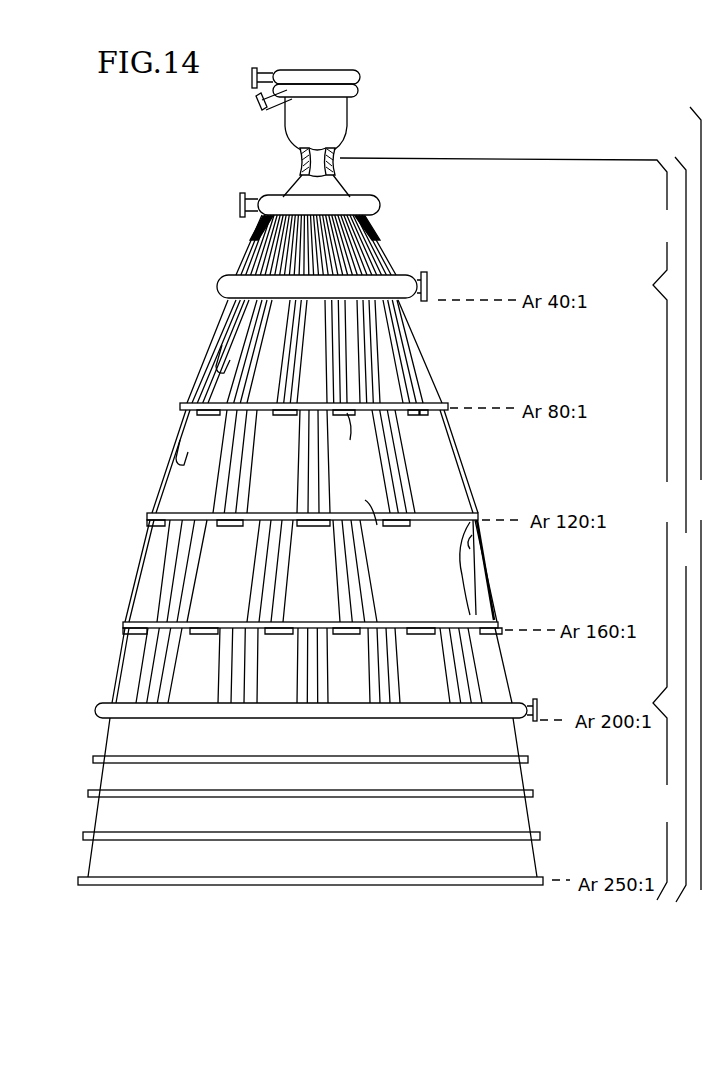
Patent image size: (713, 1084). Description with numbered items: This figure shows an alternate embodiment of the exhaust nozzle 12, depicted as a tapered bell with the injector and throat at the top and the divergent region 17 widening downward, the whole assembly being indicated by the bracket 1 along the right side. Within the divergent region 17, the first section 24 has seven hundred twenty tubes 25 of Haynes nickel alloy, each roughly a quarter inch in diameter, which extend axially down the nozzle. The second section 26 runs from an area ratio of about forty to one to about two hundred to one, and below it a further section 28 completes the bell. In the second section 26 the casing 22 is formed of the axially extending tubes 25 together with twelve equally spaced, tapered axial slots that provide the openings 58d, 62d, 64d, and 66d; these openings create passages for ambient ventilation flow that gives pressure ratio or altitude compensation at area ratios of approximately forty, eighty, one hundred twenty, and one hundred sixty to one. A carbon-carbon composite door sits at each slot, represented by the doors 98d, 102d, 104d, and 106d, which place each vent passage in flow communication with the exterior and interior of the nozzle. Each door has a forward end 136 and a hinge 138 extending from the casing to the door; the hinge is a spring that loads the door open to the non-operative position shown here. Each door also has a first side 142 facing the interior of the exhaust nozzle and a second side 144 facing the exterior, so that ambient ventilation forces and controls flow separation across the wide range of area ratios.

The rocket engine nozzle assembly 1 is at (701, 498).
The exhaust nozzle 12 is at (694, 345).
The divergent region 17 is at (686, 722).
The casing 22 is at (470, 468).
The first section 24 is at (510, 320).
The tubes 25 is at (368, 254).
The second section 26 is at (666, 641).
The lower nozzle section 28 is at (668, 846).
The opening 58d is at (210, 360).
The opening 62d is at (176, 452).
The opening 64d is at (162, 580).
The opening 66d is at (145, 652).
The door 98d is at (240, 330).
The door 102d is at (198, 437).
The door 104d is at (150, 540).
The door 106d is at (123, 693).
The forward end 136 is at (360, 501).
The hinge 138 is at (354, 438).
The first side 142 is at (474, 590).
The second side 144 is at (478, 540).